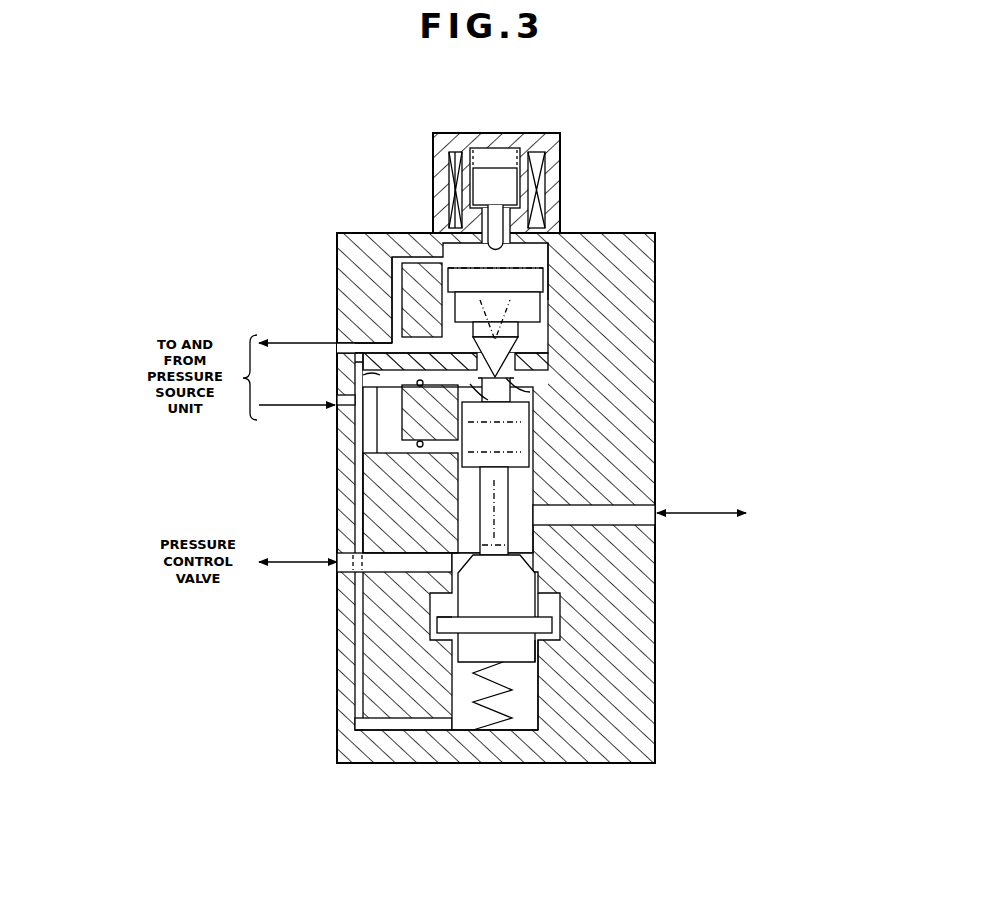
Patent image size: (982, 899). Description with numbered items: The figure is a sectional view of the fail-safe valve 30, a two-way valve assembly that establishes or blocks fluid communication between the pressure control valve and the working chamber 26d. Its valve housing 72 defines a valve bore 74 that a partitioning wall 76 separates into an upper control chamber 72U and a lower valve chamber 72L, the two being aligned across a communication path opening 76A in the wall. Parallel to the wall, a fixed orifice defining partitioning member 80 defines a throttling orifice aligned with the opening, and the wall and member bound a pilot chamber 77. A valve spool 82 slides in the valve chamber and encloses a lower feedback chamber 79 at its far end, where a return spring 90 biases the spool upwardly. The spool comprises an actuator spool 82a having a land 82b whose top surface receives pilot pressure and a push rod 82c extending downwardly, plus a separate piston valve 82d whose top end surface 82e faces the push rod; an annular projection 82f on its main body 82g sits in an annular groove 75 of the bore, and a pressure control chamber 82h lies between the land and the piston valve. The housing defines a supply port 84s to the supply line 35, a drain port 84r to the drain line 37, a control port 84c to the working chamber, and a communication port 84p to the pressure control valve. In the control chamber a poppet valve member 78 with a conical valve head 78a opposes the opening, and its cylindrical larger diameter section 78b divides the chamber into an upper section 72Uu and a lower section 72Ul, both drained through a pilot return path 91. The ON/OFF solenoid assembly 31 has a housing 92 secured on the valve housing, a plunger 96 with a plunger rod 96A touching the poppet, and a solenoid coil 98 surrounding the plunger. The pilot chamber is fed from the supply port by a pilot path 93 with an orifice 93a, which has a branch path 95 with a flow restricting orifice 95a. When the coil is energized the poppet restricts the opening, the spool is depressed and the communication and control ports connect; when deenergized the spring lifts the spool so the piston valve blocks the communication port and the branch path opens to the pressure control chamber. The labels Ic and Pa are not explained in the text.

The fail-safe valve 30 is at (366, 780).
The ON/OFF solenoid assembly 31 is at (486, 168).
The supply line 35 is at (292, 406).
The drain line 37 is at (296, 343).
The valve housing 72 is at (356, 700).
The control chamber 72U is at (548, 252).
The upper section of control chamber 72Uu is at (545, 262).
The lower section of control chamber 72Ul is at (392, 262).
The valve chamber 72L is at (530, 696).
The valve bore 74 is at (455, 690).
The annular groove 75 is at (438, 620).
The partitioning wall 76 is at (375, 362).
The communication path opening 76A is at (522, 346).
The pilot chamber 77 is at (540, 360).
The poppet valve member 78 is at (588, 309).
The valve head 78a is at (520, 318).
The cylindrical larger diameter section 78b is at (540, 304).
The lower feedback chamber 79 is at (468, 712).
The fixed orifice defining partitioning member 80 is at (420, 412).
The valve spool 82 is at (500, 528).
The actuator spool 82a is at (512, 470).
The land 82b is at (530, 437).
The push rod 82c is at (516, 480).
The piston valve 82d is at (542, 656).
The top end surface 82e is at (522, 580).
The annular projection 82f is at (546, 626).
The main body 82g is at (540, 596).
The pressure control chamber 82h is at (542, 530).
The control port 84c is at (540, 512).
The communication port 84p is at (352, 556).
The drain port 84r is at (345, 335).
The supply port 84s is at (385, 440).
The return spring 90 is at (500, 716).
The pilot return path 91 is at (400, 248).
The housing 92 is at (528, 150).
The pilot path 93 is at (380, 386).
The orifice 93a is at (350, 400).
The branch path 95 is at (540, 402).
The flow restricting orifice 95a is at (545, 380).
The plunger 96 is at (488, 175).
The plunger rod 96A is at (497, 216).
The solenoid coil 98 is at (455, 164).
The control current Ic is at (431, 183).
The controlled pressure Pa is at (296, 562).
The working chamber 26d is at (744, 518).